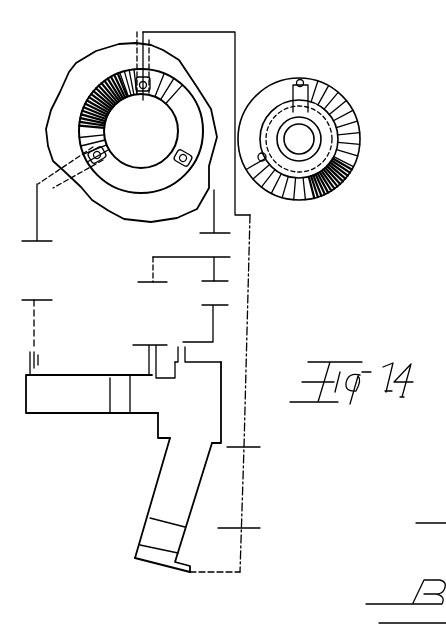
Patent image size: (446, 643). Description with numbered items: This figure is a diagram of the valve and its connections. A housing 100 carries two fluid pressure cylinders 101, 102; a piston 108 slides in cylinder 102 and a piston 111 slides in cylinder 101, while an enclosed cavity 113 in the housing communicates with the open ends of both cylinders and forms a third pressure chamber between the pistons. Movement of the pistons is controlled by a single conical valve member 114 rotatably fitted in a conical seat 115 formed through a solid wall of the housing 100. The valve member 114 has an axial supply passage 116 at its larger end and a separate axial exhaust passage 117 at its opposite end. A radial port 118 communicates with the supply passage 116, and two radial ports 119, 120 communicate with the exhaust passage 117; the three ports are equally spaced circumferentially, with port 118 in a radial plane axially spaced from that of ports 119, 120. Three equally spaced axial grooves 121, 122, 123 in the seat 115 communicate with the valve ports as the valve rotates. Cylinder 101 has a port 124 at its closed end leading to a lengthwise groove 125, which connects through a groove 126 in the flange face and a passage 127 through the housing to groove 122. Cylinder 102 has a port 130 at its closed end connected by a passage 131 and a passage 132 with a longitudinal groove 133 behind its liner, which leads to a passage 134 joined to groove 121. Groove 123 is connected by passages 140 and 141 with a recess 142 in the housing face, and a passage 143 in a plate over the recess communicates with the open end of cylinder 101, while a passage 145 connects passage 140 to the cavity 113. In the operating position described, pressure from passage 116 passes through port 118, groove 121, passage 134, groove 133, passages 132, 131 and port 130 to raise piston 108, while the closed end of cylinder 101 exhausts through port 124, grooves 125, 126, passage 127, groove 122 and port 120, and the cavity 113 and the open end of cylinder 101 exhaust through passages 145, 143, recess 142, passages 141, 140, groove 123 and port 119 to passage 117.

The housing 100 is at (190, 367).
The fluid pressure cylinder 101 is at (67, 402).
The fluid pressure cylinder 102 is at (162, 477).
The piston 108 is at (148, 535).
The piston 111 is at (115, 407).
The enclosed cavity 113 is at (189, 402).
The valve member 114 is at (335, 98).
The conical seat 115 is at (82, 121).
The axial supply passage 116 is at (342, 112).
The axial exhaust passage 117 is at (308, 137).
The radial port 118 is at (302, 80).
The radial port 119 is at (260, 162).
The radial port 120 is at (340, 154).
The axially extending groove 121 is at (133, 80).
The axially extending groove 122 is at (86, 150).
The axially extending groove 123 is at (172, 166).
The port 124 is at (36, 373).
The groove 125 is at (37, 315).
The groove 126 is at (37, 272).
The passage 127 is at (37, 223).
The port 130 is at (188, 573).
The passage 131 is at (239, 519).
The passage 132 is at (243, 501).
The groove 133 is at (243, 483).
The passage 134 is at (243, 460).
The passage 140 is at (191, 236).
The passage 141 is at (152, 294).
The recess 142 is at (152, 315).
The passage 143 is at (154, 351).
The passage 145 is at (205, 311).